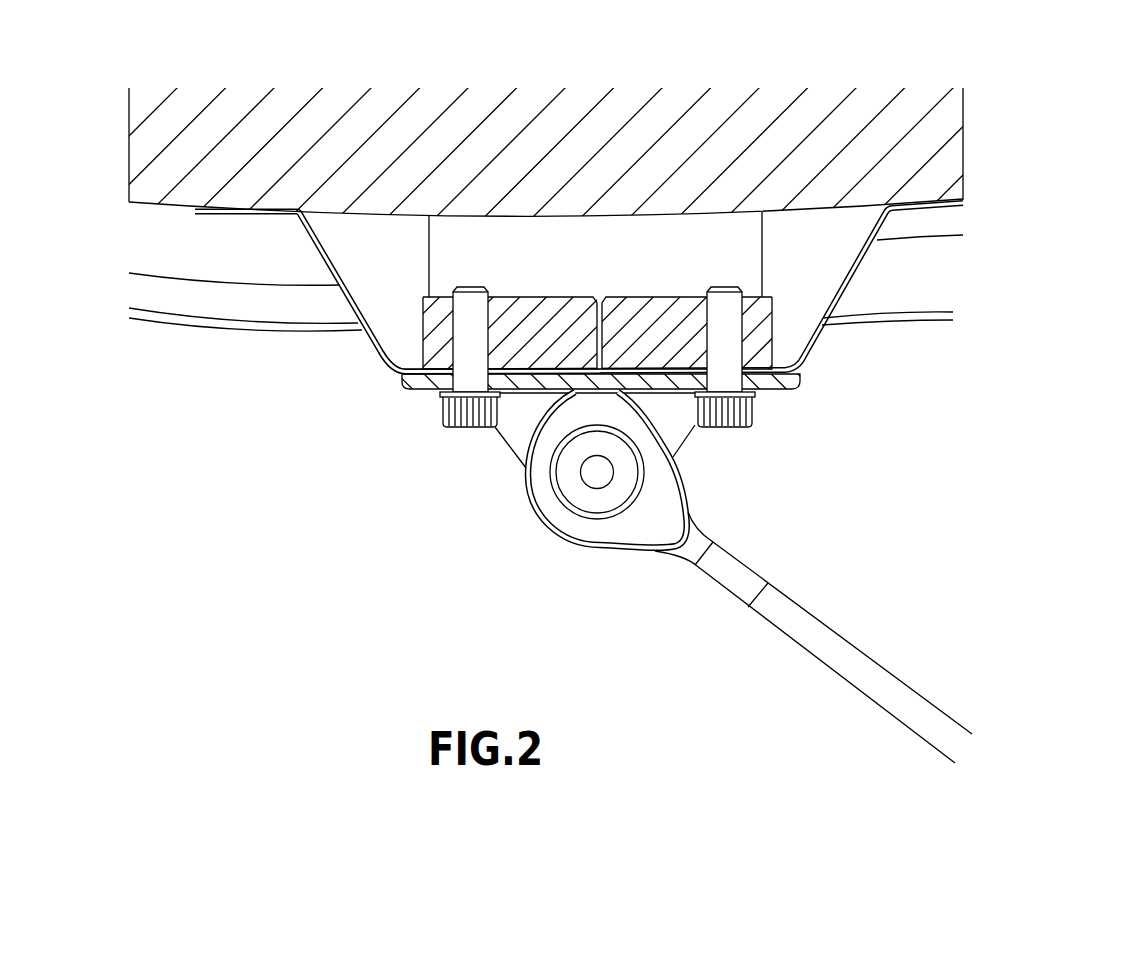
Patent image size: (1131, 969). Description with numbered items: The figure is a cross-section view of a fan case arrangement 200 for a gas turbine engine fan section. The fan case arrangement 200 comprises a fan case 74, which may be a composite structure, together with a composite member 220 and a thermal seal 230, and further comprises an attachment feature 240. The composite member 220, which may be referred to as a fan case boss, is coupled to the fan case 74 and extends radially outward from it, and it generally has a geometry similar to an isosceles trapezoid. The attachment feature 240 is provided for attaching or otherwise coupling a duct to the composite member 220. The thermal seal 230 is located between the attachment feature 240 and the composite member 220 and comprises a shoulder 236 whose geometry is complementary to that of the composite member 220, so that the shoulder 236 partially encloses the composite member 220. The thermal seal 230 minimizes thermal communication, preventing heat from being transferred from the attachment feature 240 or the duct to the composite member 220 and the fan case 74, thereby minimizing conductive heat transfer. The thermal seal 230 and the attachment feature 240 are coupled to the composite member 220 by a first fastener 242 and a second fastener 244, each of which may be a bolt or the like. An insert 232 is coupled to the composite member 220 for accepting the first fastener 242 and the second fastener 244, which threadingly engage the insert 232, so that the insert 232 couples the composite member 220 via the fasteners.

The fan case 74 is at (129, 147).
The fan case arrangement 200 is at (1050, 111).
The composite member 220 is at (817, 339).
The thermal seal 230 is at (770, 380).
The insert 232 is at (532, 305).
The shoulder 236 is at (388, 380).
The attachment feature 240 is at (540, 487).
The first fastener 242 is at (467, 427).
The second fastener 244 is at (735, 427).